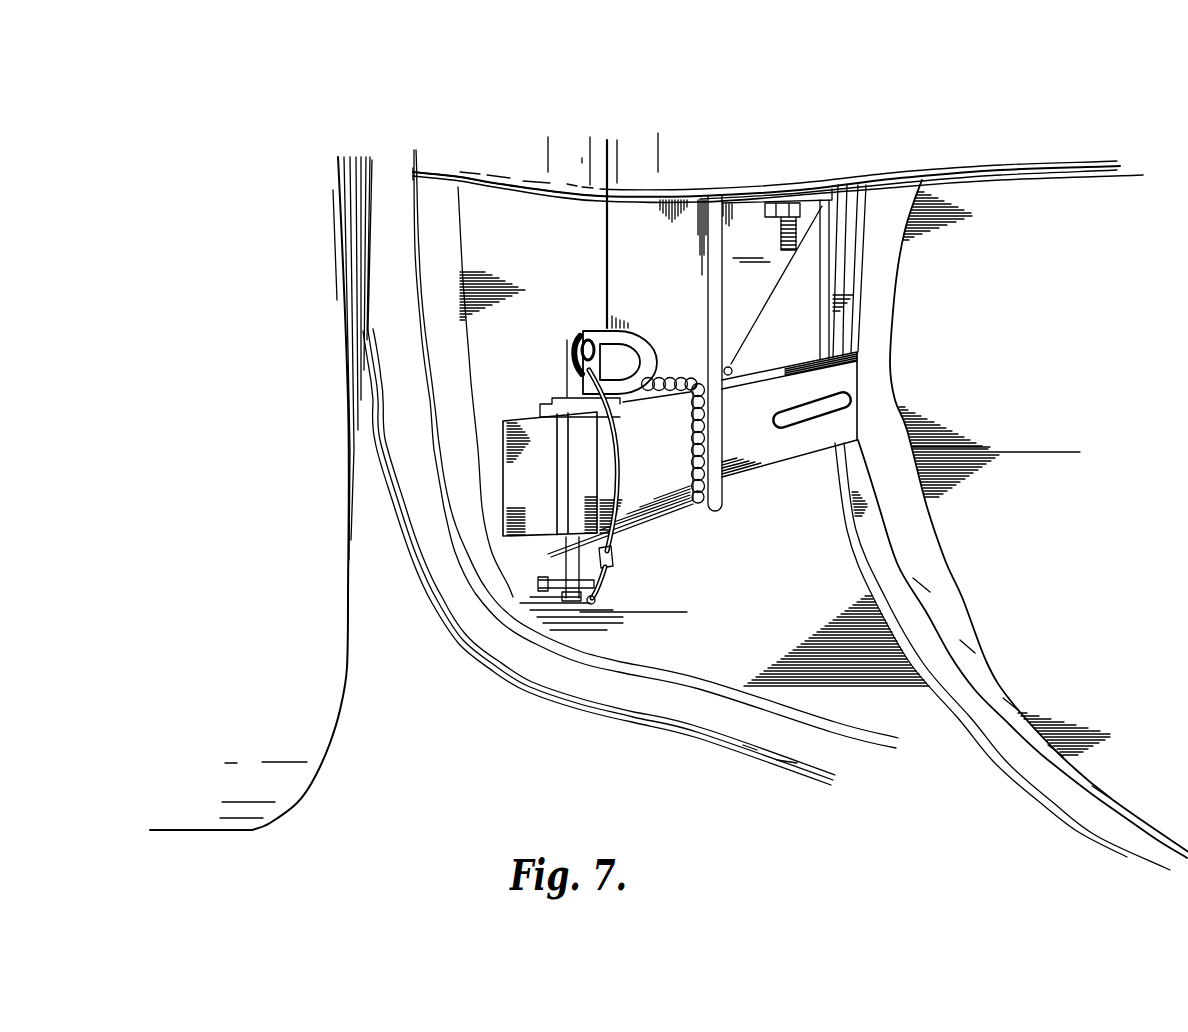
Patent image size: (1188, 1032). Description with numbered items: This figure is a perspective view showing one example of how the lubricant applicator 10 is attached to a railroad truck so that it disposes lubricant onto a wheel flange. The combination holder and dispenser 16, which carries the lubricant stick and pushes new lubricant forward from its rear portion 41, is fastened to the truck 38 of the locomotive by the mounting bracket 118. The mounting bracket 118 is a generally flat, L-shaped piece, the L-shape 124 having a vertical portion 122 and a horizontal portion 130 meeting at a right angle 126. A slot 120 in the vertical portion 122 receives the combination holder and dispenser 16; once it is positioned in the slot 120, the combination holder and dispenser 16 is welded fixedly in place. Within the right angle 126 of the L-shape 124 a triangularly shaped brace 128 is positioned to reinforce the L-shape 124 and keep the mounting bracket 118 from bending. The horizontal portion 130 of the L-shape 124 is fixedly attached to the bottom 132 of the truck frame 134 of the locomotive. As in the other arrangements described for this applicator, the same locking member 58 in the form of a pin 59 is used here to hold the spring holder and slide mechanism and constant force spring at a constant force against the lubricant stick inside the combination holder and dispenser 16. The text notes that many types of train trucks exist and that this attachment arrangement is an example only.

The lubricant applicator 10 is at (788, 491).
The combination holder and dispenser 16 is at (750, 470).
The truck 38 is at (963, 167).
The rear portion 41 is at (560, 412).
The locking member 58 is at (560, 557).
The pin 59 is at (567, 553).
The mounting bracket 118 is at (631, 210).
The slot 120 is at (696, 500).
The vertical portion 122 is at (660, 230).
The L-shape 124 is at (668, 195).
The right angle 126 is at (712, 197).
The triangularly shaped brace 128 is at (768, 290).
The horizontal portion 130 is at (836, 180).
The bottom 132 is at (790, 195).
The truck frame 134 is at (480, 183).